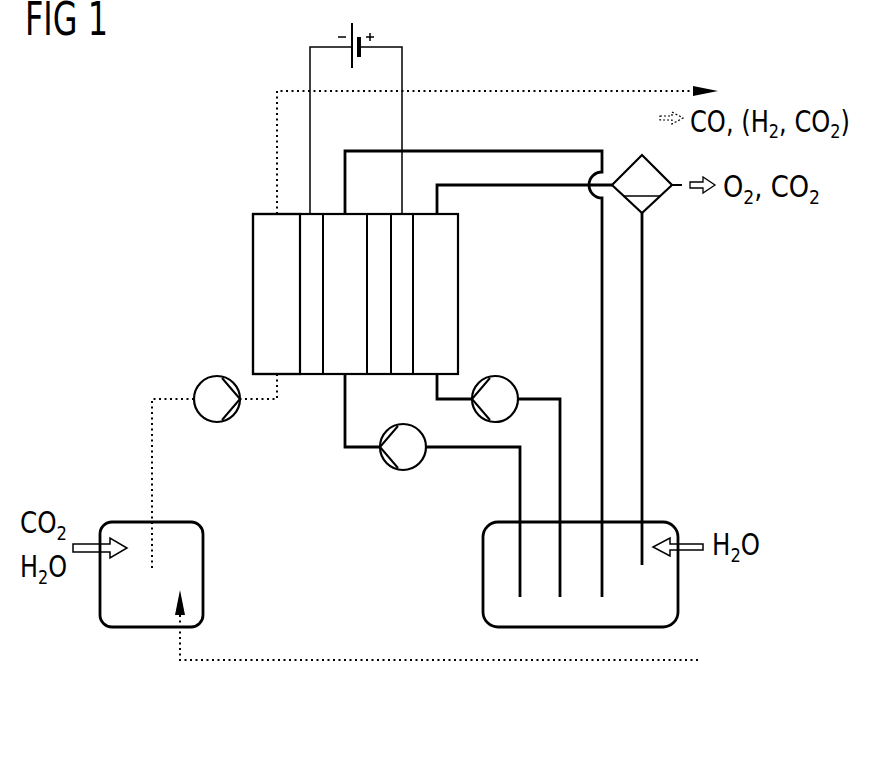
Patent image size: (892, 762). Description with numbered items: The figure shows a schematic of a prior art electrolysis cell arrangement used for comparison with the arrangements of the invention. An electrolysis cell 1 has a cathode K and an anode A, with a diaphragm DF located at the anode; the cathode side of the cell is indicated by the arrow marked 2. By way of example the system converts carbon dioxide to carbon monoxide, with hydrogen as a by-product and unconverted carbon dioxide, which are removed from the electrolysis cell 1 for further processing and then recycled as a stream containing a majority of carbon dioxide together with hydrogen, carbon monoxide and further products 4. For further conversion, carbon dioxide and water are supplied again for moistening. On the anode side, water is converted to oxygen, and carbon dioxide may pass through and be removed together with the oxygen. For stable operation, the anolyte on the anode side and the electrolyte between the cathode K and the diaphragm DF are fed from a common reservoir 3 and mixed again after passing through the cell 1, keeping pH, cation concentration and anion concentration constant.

The electrolysis cell 1 is at (336, 210).
The cathode compartment / electrolyte inlet 2 is at (287, 294).
The common reservoir 3 is at (517, 607).
The recycled products 4 is at (440, 652).